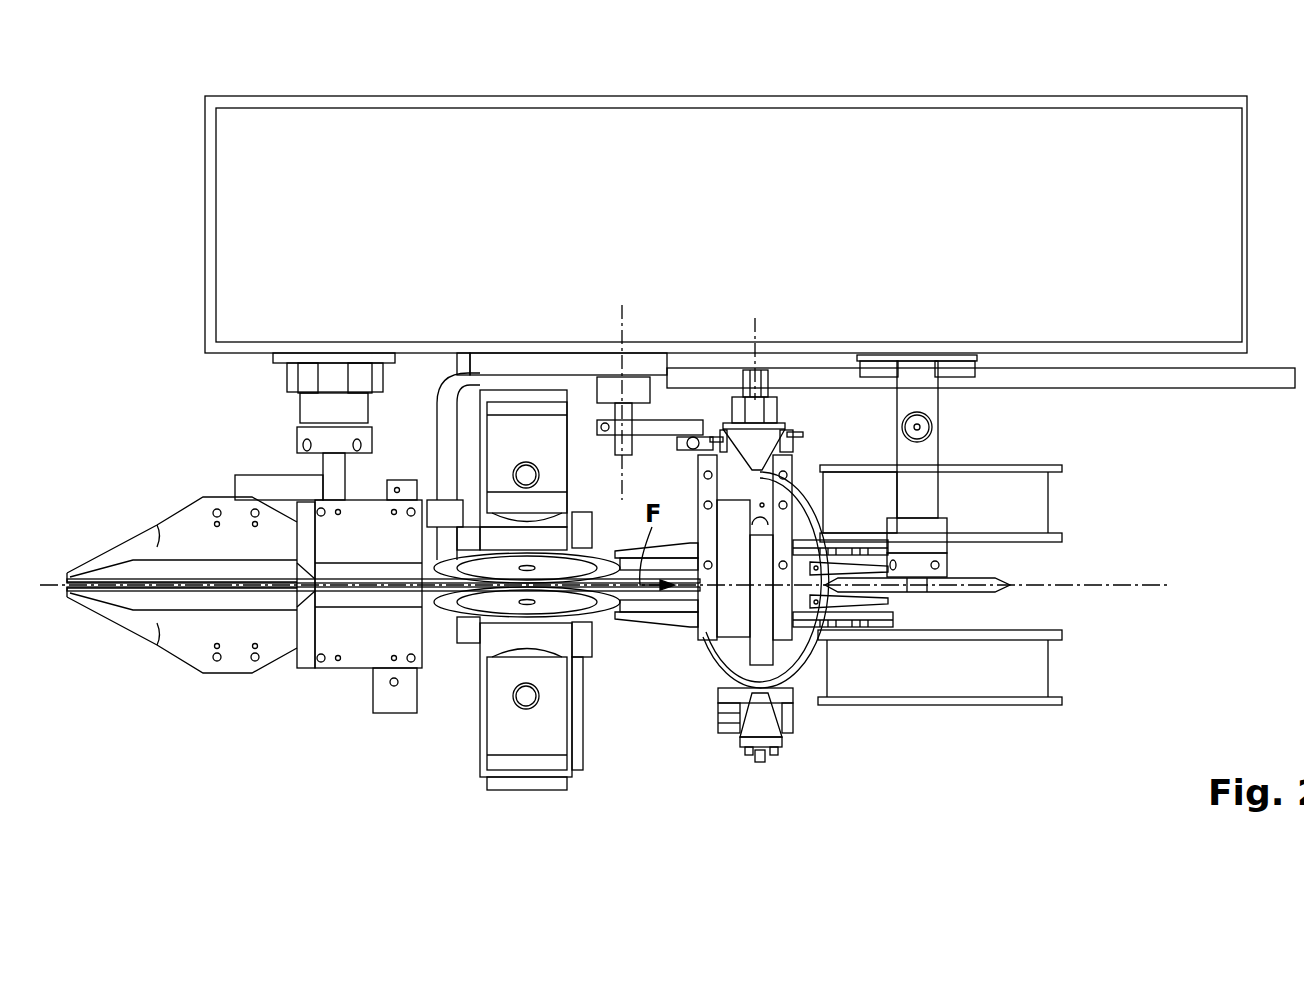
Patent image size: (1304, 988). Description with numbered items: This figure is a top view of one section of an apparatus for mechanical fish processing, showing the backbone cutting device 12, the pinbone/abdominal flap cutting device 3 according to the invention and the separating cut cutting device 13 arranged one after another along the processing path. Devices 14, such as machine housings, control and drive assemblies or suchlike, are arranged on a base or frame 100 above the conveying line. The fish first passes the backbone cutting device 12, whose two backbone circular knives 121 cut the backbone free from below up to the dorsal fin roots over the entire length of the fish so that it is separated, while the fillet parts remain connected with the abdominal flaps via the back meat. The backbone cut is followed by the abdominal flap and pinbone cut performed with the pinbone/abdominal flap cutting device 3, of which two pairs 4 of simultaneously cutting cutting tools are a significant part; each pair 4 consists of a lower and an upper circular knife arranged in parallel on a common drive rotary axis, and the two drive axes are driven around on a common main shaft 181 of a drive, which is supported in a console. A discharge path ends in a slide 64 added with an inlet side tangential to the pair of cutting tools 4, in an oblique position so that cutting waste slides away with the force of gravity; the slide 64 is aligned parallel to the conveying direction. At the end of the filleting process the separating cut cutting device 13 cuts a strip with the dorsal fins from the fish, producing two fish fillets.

The frame 100 is at (726, 195).
The devices 14 is at (1103, 95).
The main shaft 181 is at (760, 330).
The pairs of cutting tools 4 is at (810, 510).
The slide 64 is at (1016, 467).
The backbone cutting device 12 is at (383, 581).
The backbone circular knives 121 is at (617, 600).
The pinbone/abdominal flap cutting device 3 is at (739, 506).
The separating cut cutting device 13 is at (917, 612).